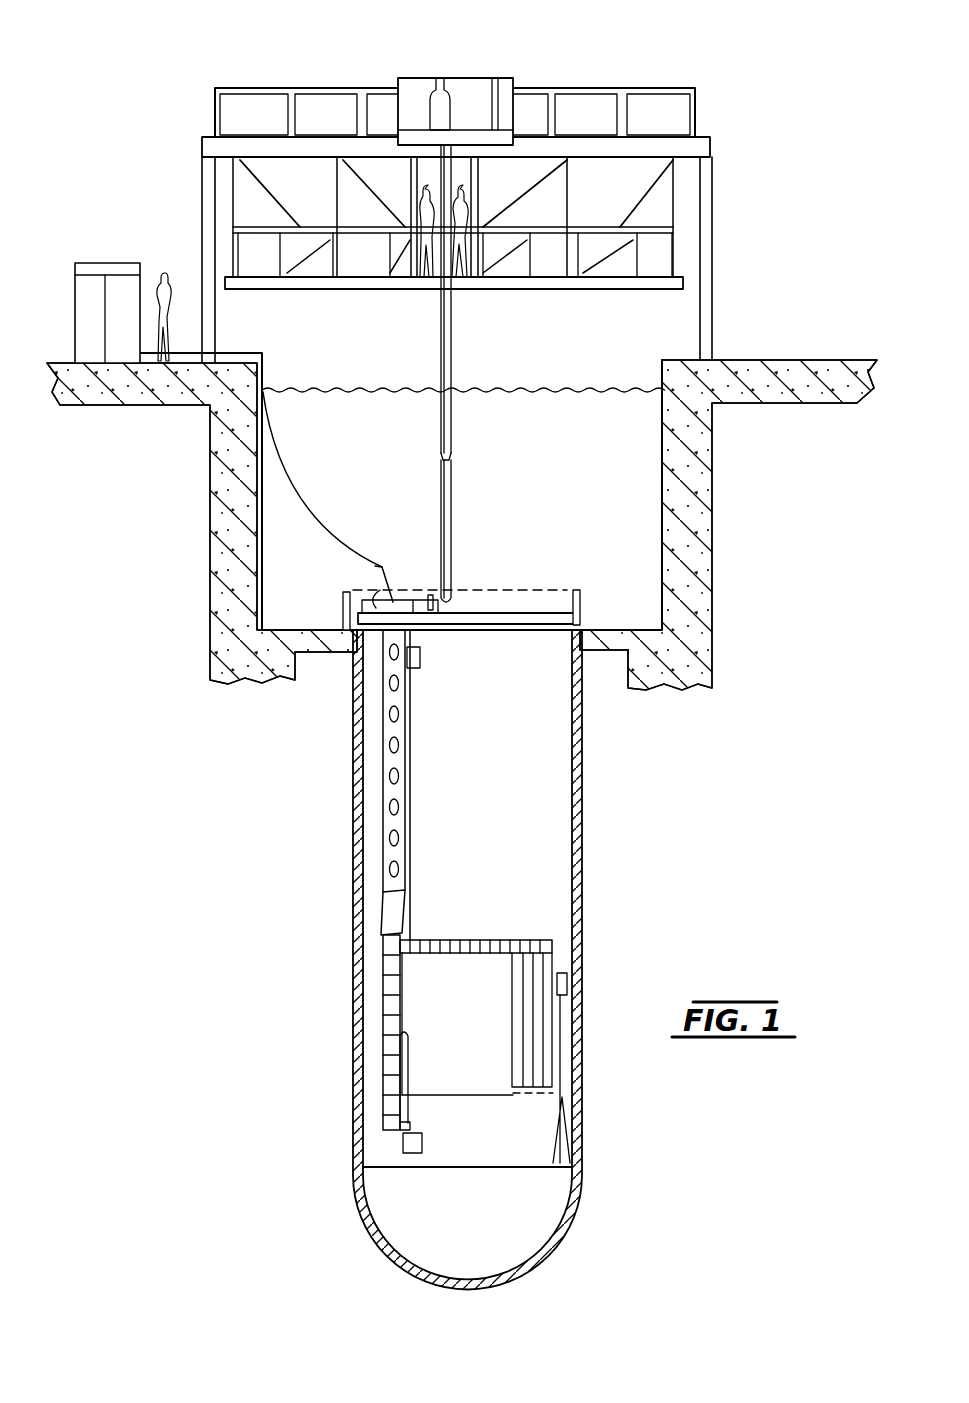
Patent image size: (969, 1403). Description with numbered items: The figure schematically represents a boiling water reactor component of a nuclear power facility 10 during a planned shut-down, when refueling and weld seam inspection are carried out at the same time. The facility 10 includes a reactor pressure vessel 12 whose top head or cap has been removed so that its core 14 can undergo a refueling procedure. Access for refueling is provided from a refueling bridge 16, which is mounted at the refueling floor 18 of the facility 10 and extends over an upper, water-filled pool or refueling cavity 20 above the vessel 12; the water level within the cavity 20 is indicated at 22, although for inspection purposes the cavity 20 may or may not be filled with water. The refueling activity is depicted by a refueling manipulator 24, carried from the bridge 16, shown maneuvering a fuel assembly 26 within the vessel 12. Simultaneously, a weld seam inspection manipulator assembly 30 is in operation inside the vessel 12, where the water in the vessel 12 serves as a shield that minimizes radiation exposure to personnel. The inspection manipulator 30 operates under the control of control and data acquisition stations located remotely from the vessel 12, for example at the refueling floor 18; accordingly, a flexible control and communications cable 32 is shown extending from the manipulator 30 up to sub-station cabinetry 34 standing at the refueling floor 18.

The boiling water reactor component of a nuclear power facility 10 is at (800, 210).
The reactor pressure vessel 12 is at (582, 843).
The core 14 is at (535, 987).
The refueling bridge 16 is at (272, 85).
The refueling floor 18 is at (790, 360).
The refueling cavity 20 is at (637, 487).
The water level 22 is at (562, 388).
The refueling manipulator 24 is at (452, 322).
The fuel assembly 26 is at (453, 518).
The weld seam inspection manipulator assembly 30 is at (383, 783).
The flexible control and communications cable 32 is at (317, 520).
The sub-station cabinetry 34 is at (117, 262).